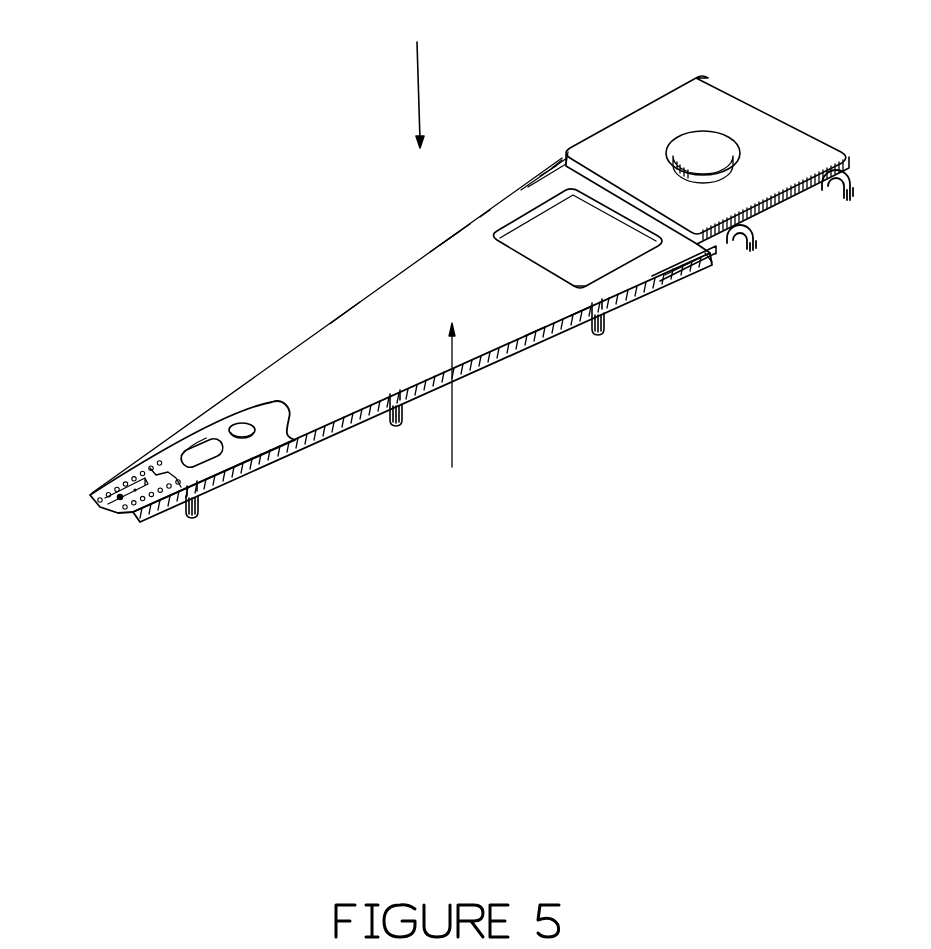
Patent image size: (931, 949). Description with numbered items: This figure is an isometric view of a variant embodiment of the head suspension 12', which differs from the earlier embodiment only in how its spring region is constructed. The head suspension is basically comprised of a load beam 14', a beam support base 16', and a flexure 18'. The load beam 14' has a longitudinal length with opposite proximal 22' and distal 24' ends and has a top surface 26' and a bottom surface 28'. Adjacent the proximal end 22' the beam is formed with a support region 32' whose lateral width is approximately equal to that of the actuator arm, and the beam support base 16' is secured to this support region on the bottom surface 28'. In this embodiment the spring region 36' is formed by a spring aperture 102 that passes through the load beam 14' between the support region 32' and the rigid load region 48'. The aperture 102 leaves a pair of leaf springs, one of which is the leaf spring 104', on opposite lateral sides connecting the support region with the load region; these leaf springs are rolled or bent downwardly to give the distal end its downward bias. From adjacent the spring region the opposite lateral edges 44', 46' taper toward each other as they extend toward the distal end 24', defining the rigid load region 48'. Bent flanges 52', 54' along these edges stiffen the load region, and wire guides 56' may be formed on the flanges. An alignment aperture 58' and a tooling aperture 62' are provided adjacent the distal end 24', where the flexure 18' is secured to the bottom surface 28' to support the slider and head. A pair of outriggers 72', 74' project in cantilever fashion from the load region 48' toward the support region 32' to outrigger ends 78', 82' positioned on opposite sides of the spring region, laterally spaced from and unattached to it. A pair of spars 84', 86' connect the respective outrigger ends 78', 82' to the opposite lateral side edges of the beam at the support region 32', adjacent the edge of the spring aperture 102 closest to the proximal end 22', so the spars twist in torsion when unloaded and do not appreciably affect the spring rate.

The head suspension 12' is at (413, 82).
The load beam 14' is at (327, 325).
The beam support base 16' is at (706, 124).
The flexure 18' is at (192, 431).
The proximal end 22' is at (727, 145).
The distal end 24' is at (105, 524).
The top surface 26' is at (422, 383).
The bottom surface 28' is at (321, 283).
The support region 32' is at (708, 304).
The spring region 36' is at (434, 230).
The lateral edge 44' is at (557, 201).
The lateral edge 46' is at (549, 404).
The rigid load region 48' is at (453, 407).
The bent flange 52' is at (426, 208).
The bent flange 54' is at (589, 384).
The wire guide 56' is at (425, 449).
The alignment aperture 58' is at (172, 421).
The tooling aperture 62' is at (241, 365).
The outrigger 72' is at (528, 131).
The outrigger 74' is at (690, 310).
The outrigger terminal end 78' is at (541, 122).
The outrigger terminal end 82' is at (762, 270).
The spar 84' is at (573, 125).
The spar 86' is at (790, 213).
The spring aperture 102 is at (583, 230).
The leaf spring 104' is at (456, 192).